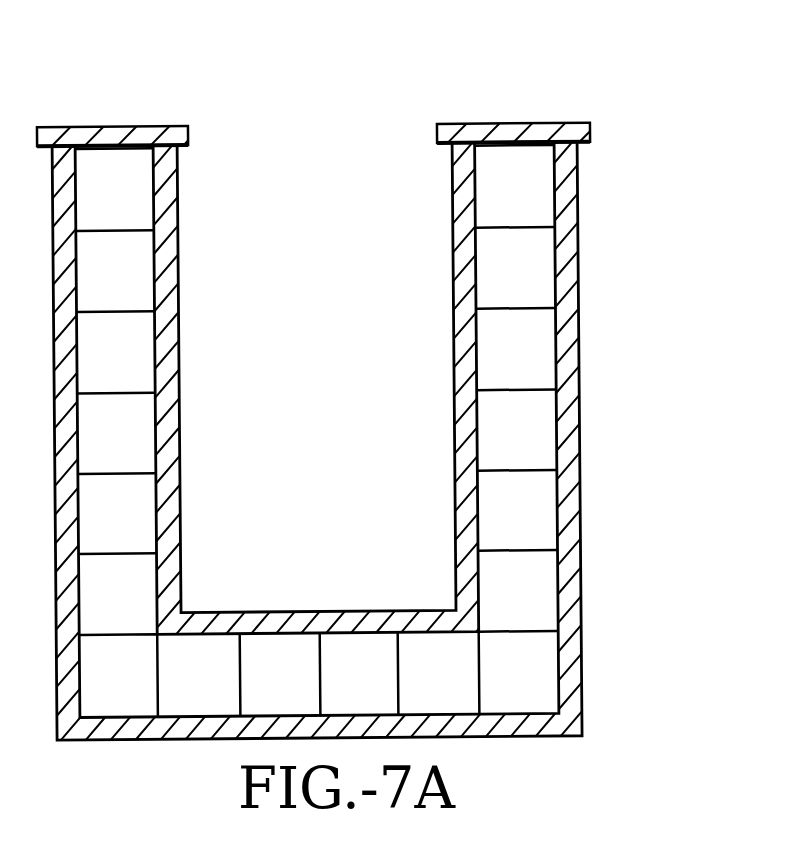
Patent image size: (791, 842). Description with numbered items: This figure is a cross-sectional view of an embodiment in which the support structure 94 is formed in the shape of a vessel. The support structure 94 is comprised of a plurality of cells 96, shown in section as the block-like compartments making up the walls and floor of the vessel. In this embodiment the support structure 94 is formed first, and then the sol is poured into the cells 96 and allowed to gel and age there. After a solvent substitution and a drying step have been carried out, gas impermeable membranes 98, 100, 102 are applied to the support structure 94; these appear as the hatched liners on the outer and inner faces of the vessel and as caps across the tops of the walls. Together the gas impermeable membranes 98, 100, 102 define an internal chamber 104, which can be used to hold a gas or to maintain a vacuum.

The support structure 94 is at (612, 165).
The cells 96 is at (542, 275).
The gas impermeable membrane 98 is at (585, 648).
The gas impermeable membrane 100 is at (183, 343).
The gas impermeable membrane 102 is at (360, 110).
The internal chamber 104 is at (438, 503).